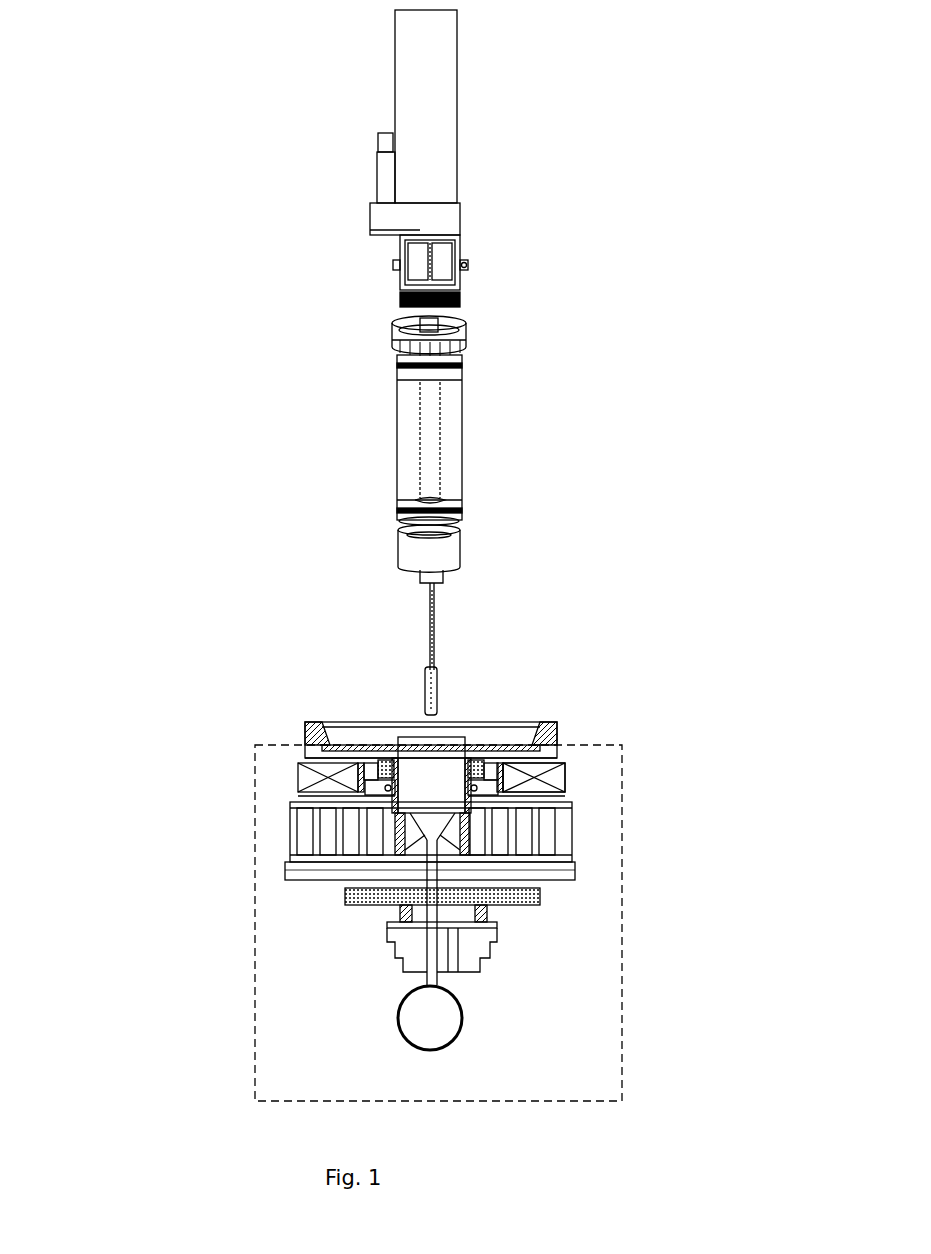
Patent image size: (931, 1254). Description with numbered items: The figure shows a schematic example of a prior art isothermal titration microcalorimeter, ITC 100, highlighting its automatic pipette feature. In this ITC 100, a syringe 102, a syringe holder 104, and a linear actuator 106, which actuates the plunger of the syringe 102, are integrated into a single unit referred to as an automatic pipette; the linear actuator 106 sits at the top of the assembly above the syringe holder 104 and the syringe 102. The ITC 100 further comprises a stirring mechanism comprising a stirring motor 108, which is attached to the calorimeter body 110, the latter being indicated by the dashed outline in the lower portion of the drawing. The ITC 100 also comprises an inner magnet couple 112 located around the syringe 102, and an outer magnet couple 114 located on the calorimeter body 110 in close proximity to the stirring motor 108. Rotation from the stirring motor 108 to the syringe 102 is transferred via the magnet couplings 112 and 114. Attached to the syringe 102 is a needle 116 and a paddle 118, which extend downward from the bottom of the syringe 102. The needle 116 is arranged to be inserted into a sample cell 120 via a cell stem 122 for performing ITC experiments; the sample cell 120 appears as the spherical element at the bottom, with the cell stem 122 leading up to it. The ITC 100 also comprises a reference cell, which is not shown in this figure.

The ITC 100 is at (123, 177).
The syringe 102 is at (432, 433).
The syringe holder 104 is at (460, 468).
The linear actuator 106 is at (457, 185).
The stirring motor 108 is at (560, 775).
The calorimeter body 110 is at (622, 923).
The inner magnet couple 112 is at (470, 745).
The outer magnet couple 114 is at (460, 555).
The needle 116 is at (430, 635).
The paddle 118 is at (430, 693).
The sample cell 120 is at (398, 1021).
The cell stem 122 is at (393, 942).